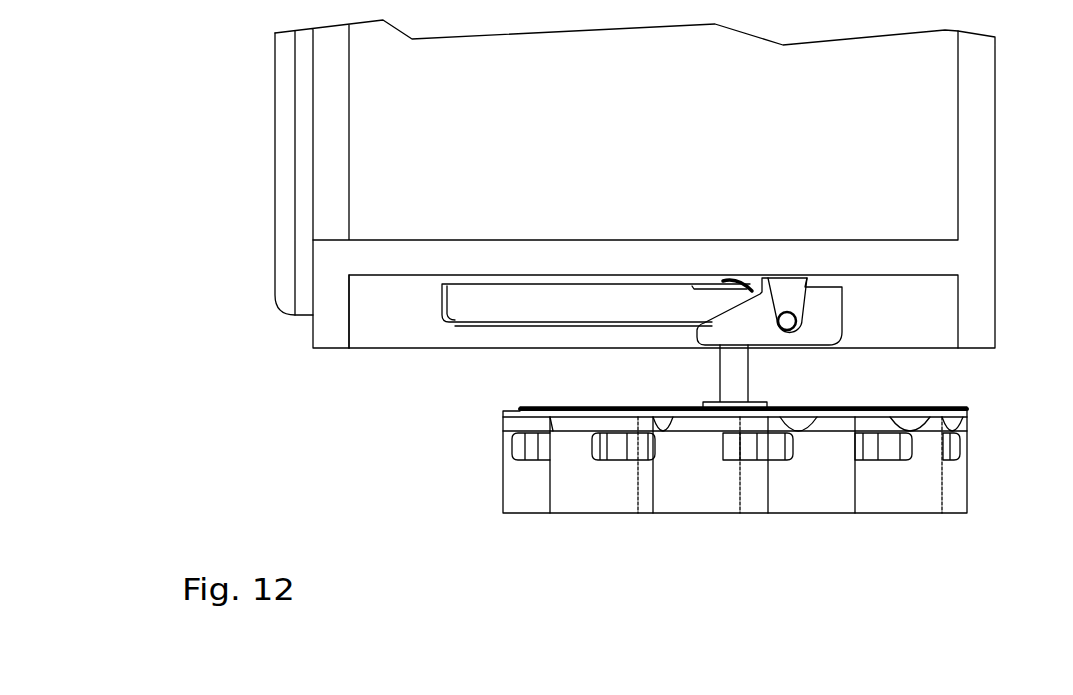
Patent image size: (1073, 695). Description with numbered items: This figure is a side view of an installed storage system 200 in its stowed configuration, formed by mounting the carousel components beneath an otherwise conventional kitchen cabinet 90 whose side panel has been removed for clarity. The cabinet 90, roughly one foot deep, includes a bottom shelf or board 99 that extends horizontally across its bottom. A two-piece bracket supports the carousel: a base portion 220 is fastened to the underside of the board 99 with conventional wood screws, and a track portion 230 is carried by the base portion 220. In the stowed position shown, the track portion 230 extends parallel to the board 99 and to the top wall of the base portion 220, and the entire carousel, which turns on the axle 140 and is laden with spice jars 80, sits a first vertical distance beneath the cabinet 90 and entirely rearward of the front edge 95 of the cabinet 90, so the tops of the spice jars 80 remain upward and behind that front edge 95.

The installed storage system 200 is at (280, 459).
The kitchen cabinet 90 is at (983, 310).
The front edge 95 is at (304, 344).
The bottom shelf or board 99 is at (377, 262).
The track portion 230 is at (484, 342).
The base portion 220 is at (857, 343).
The axle 140 is at (710, 379).
The spice jars 80 is at (597, 516).